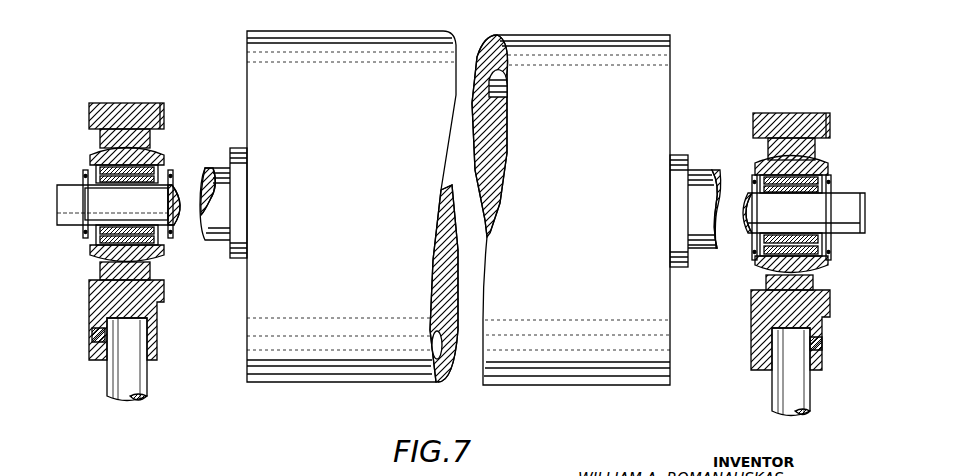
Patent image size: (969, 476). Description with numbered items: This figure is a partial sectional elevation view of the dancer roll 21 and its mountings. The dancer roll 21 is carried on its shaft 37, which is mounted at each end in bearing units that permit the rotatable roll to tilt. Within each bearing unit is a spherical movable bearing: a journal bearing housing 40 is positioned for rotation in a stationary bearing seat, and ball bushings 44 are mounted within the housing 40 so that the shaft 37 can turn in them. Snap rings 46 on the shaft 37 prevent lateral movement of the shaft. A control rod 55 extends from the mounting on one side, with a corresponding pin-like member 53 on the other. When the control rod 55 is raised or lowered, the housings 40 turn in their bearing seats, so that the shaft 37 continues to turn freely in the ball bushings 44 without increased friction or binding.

The dancer roll 21 is at (596, 38).
The shaft 37 is at (847, 201).
The journal bearing housings 40 is at (745, 148).
The ball bushings 44 is at (750, 186).
The snap rings 46 is at (166, 180).
The mounting pin 53 is at (135, 383).
The control rod 55 is at (795, 393).